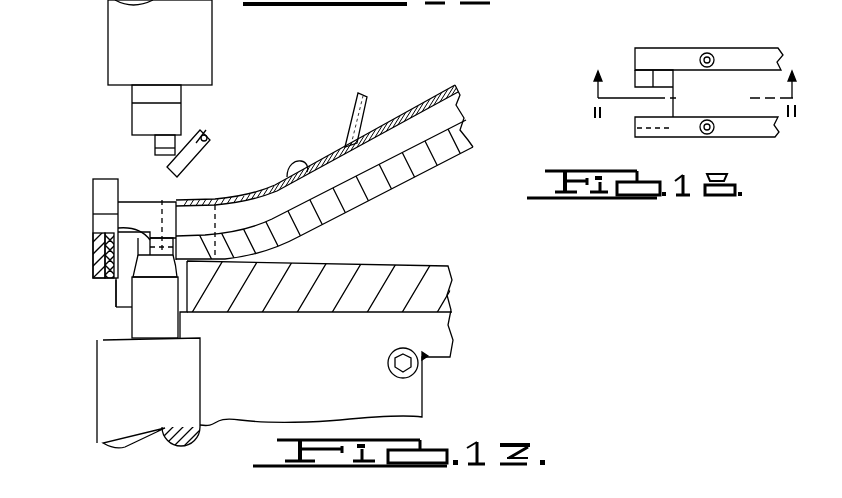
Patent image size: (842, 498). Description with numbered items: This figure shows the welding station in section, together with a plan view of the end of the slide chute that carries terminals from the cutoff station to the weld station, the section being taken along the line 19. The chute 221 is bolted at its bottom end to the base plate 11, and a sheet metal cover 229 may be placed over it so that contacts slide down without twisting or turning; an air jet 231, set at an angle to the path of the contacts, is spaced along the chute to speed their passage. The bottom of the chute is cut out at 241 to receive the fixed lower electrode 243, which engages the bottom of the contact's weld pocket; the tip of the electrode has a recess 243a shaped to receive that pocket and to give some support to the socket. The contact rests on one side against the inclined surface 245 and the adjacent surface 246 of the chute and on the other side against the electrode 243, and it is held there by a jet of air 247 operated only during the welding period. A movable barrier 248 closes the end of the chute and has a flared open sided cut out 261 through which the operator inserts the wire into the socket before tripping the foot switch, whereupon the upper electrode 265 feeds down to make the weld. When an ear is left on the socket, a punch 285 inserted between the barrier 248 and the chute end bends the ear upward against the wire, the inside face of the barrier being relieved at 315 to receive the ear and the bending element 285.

In FIG. 17, the base plate 11 is at (420, 283).
In FIG. 18, the section line 19 is at (675, 94).
In FIG. 17, the chute 221 is at (468, 113).
In FIG. 18, the chute 221 is at (750, 55).
In FIG. 17, the sheet metal cover 229 is at (425, 100).
In FIG. 17, the air jet 231 is at (367, 102).
In FIG. 17, the cut out 241 is at (186, 234).
In FIG. 18, the cut out 241 is at (668, 100).
In FIG. 17, the fixed lower electrode 243 is at (142, 320).
In FIG. 18, the fixed lower electrode 243 is at (645, 80).
In FIG. 17, the recess 243a is at (166, 217).
In FIG. 17, the inclined surface 245 is at (128, 233).
In FIG. 18, the surface 246 is at (663, 77).
In FIG. 17, the jet of air 247 is at (206, 137).
In FIG. 17, the movable barrier 248 is at (97, 270).
In FIG. 17, the flared open sided cut out 261 is at (105, 220).
In FIG. 17, the upper electrode 265 is at (141, 113).
In FIG. 17, the punch (bending element) 285 is at (112, 282).
In FIG. 17, the relieved portion 315 is at (93, 252).